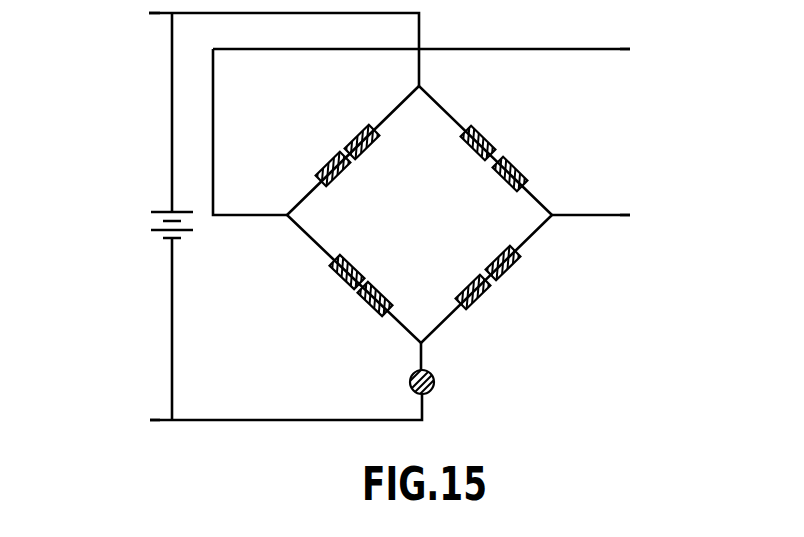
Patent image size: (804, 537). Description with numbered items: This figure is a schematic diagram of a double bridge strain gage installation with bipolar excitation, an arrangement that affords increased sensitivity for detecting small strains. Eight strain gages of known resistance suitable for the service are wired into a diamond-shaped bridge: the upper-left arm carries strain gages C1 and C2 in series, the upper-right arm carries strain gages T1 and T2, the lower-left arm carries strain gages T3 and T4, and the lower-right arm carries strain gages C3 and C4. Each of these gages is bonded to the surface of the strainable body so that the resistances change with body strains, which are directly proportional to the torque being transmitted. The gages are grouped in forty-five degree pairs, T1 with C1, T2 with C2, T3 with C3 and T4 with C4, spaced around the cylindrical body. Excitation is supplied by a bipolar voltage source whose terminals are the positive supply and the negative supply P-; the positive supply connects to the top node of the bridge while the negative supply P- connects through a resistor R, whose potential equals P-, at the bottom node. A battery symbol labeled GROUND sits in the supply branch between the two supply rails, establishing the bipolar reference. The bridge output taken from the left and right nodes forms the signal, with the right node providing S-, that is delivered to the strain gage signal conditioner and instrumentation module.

The strain gage C1 is at (356, 130).
The strain gage C2 is at (321, 163).
The strain gage C3 is at (518, 266).
The strain gage C4 is at (484, 302).
The strain gage T1 is at (478, 131).
The strain gage T2 is at (515, 166).
The strain gage T3 is at (331, 272).
The strain gage T4 is at (367, 304).
The voltage source negative terminal P- is at (139, 418).
The signal negative terminal S- is at (644, 214).
The ground battery symbol GROUND is at (114, 223).
The reference resistor R = P- R is at (464, 381).